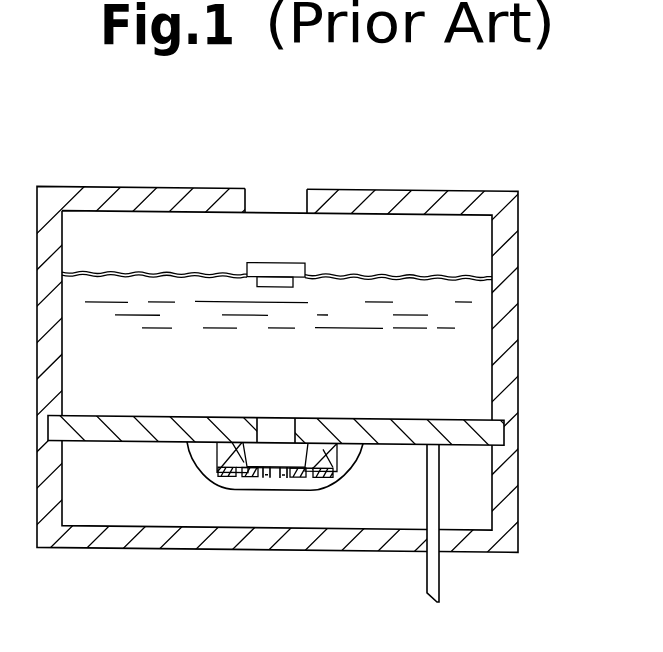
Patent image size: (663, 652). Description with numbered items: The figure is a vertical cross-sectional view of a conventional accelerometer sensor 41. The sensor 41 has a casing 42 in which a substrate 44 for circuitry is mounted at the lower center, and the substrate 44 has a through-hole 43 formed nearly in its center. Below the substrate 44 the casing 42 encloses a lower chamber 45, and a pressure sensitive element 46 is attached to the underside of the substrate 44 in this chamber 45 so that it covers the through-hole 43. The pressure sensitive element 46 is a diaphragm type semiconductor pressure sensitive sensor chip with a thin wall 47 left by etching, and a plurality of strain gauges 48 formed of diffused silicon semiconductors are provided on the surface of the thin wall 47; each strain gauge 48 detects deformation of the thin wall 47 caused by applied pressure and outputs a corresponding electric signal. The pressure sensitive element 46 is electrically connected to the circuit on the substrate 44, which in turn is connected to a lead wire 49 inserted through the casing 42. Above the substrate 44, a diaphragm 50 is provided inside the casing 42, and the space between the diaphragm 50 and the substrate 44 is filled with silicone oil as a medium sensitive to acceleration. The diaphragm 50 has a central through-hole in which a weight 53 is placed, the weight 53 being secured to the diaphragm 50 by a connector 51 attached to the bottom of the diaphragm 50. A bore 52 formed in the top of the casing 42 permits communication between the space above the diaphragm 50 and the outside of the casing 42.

The accelerometer sensor 41 is at (530, 170).
The casing 42 is at (518, 211).
The through-hole 43 is at (290, 415).
The substrate 44 is at (372, 415).
The lower chamber 45 is at (128, 497).
The pressure sensitive element 46 is at (326, 453).
The thin wall 47 is at (250, 459).
The strain gauges 48 is at (283, 476).
The lead wire 49 is at (427, 579).
The diaphragm 50 is at (128, 273).
The connector 51 is at (293, 283).
The bore 52 is at (301, 187).
The weight 53 is at (300, 259).